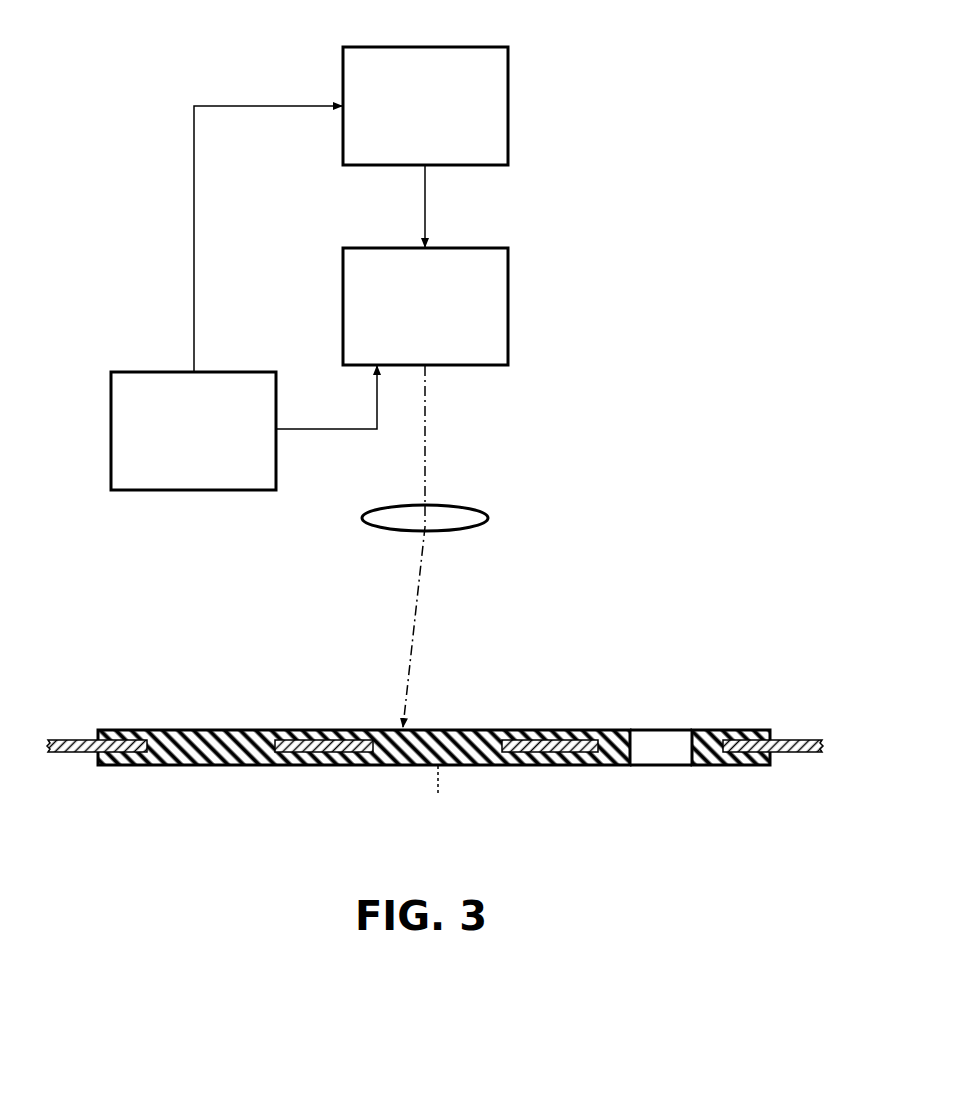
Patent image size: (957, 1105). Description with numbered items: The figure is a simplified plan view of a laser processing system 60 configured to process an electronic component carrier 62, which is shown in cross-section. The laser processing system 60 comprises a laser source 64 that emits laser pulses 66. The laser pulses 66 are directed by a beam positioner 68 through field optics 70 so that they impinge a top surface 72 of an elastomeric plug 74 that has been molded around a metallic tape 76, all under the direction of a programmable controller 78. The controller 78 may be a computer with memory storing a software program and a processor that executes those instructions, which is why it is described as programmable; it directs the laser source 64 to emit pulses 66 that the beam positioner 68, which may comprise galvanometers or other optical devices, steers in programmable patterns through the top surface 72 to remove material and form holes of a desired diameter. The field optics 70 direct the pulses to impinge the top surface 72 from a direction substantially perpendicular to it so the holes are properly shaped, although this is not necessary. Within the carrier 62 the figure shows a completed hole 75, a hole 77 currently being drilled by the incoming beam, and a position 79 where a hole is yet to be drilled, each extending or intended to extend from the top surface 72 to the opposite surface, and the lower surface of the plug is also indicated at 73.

The laser processing system 60 is at (143, 36).
The electronic component carrier 62 is at (435, 750).
The laser source 64 is at (508, 97).
The laser pulses 66 is at (422, 567).
The beam positioner 68 is at (508, 310).
The field optics 70 is at (487, 516).
The top surface 72 is at (475, 730).
The bottom surface of substrate 73 is at (370, 766).
The elastomeric plug 74 is at (615, 730).
The completed hole 75 is at (663, 766).
The metallic tape 76 is at (330, 742).
The hole being drilled 77 is at (439, 792).
The programmable controller 78 is at (183, 490).
The position where a hole is to be drilled 79 is at (190, 730).